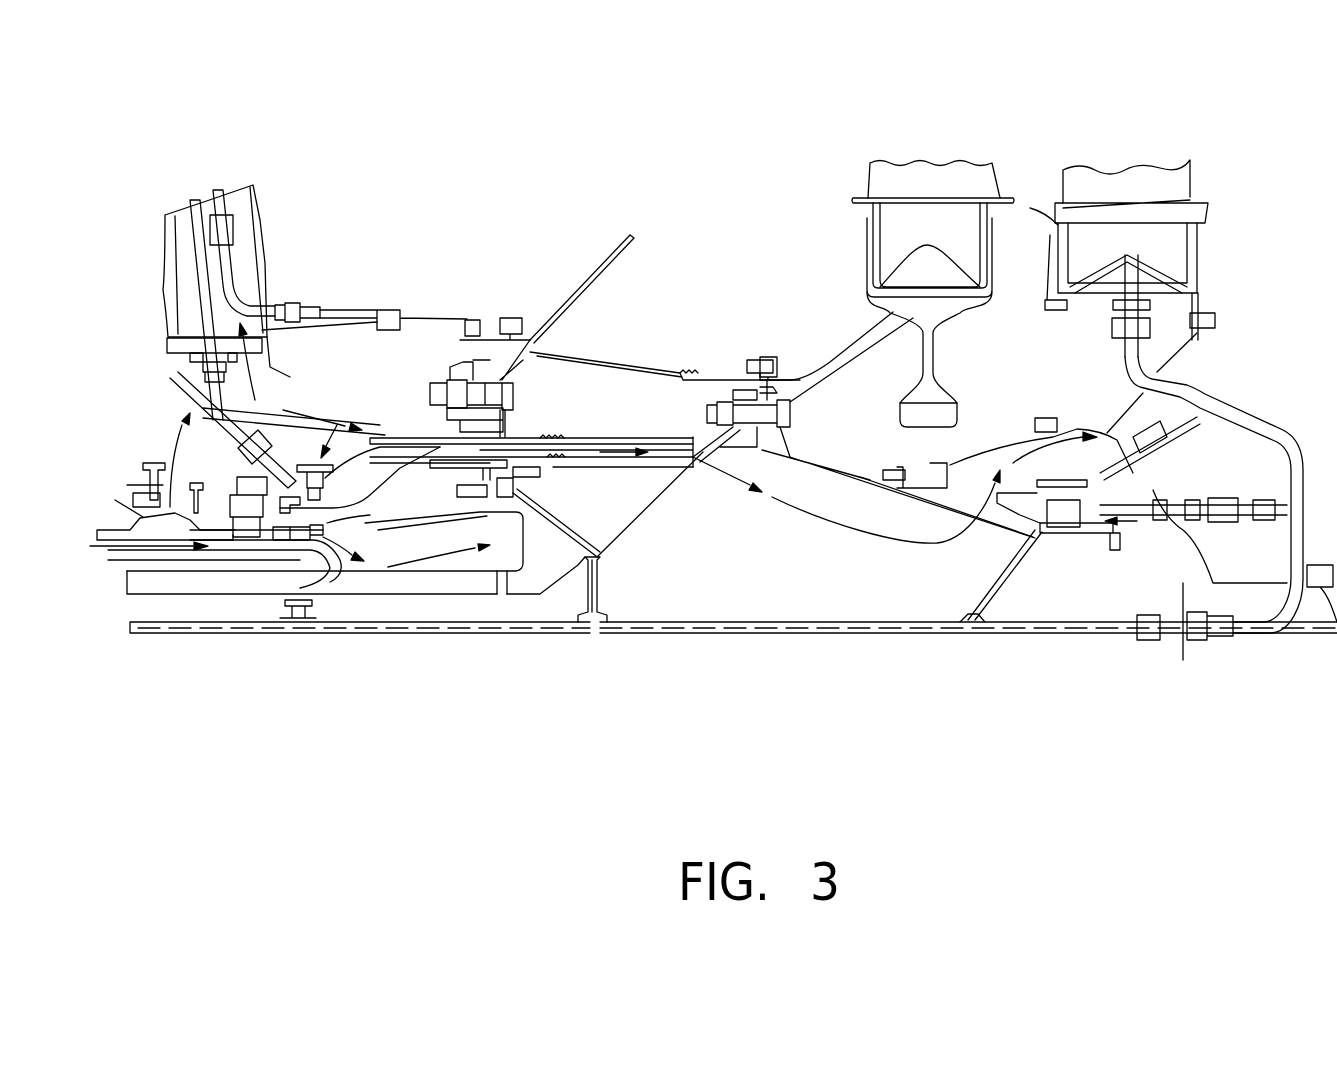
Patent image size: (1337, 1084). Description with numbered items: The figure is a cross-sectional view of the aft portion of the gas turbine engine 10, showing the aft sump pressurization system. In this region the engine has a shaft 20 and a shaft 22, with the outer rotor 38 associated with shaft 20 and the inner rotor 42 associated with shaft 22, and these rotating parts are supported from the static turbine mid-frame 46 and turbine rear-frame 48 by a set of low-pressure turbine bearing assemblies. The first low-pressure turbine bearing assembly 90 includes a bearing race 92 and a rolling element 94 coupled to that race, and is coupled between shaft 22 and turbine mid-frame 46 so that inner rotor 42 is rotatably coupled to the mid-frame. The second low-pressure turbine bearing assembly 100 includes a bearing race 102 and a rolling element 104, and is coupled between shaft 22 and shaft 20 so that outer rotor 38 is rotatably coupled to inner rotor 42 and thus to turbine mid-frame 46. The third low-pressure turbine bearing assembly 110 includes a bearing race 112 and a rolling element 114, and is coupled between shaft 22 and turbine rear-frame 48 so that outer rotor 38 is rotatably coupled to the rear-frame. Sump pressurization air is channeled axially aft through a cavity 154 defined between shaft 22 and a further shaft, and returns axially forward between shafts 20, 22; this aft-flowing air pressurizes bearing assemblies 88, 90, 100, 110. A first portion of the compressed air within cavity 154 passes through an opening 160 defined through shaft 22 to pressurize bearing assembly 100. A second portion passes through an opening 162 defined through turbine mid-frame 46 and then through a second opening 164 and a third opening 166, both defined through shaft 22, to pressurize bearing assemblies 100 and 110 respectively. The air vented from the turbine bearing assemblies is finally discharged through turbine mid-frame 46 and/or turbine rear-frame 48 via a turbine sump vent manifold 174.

The gas turbine engine 10 is at (883, 55).
The shaft 20 is at (182, 583).
The shaft 22 is at (163, 558).
The outer rotor 38 is at (962, 148).
The inner rotor 42 is at (600, 263).
The turbine mid-frame 46 is at (287, 235).
The turbine rear-frame 48 is at (1152, 150).
The bearing assembly 88 is at (247, 540).
The first low-pressure turbine bearing assembly 90 is at (333, 411).
The bearing race 92 is at (377, 513).
The rolling element 94 is at (320, 487).
The second low-pressure turbine bearing assembly 100 is at (548, 483).
The bearing race 102 is at (510, 490).
The rolling element 104 is at (513, 489).
The third low-pressure turbine bearing assembly 110 is at (1175, 530).
The bearing race 112 is at (1067, 530).
The rolling element 114 is at (1070, 517).
The cavity 154 is at (440, 558).
The opening 160 is at (337, 560).
The opening 162 is at (303, 393).
The second opening 164 is at (697, 460).
The third opening 166 is at (980, 553).
The turbine sump vent manifold 174 is at (1183, 447).